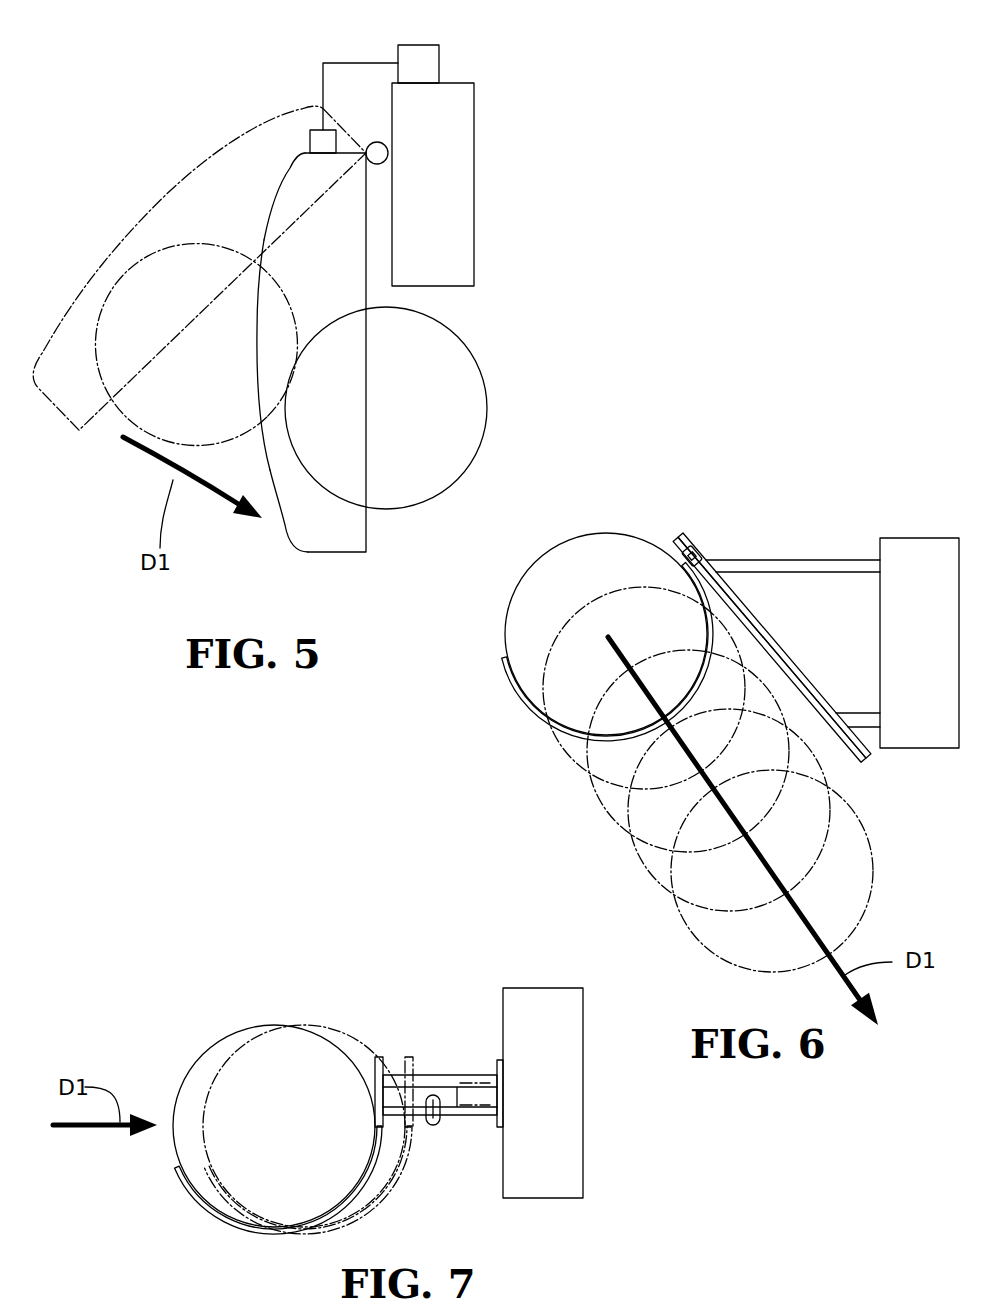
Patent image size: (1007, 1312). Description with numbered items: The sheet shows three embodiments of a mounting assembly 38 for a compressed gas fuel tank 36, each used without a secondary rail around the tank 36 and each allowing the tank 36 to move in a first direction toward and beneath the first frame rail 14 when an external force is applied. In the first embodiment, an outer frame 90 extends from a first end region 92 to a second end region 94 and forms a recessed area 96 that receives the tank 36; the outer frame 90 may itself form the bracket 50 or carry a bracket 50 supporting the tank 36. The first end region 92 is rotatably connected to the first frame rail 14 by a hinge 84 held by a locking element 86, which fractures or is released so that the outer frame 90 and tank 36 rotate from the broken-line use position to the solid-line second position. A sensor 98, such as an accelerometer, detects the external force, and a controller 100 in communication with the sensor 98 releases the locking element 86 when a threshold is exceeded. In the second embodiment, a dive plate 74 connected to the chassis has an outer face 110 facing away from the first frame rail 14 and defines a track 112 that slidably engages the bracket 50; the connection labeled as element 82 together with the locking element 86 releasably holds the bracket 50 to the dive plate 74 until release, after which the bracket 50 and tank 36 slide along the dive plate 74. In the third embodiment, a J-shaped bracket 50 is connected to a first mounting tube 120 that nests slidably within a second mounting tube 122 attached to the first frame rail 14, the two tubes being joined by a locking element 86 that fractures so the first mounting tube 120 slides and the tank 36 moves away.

In FIG. 5, the first frame rail 14 is at (474, 195).
In FIG. 6, the first frame rail 14 is at (930, 538).
In FIG. 7, the first frame rail 14 is at (540, 988).
In FIG. 5, the compressed gas fuel tank 36 is at (473, 352).
In FIG. 6, the compressed gas fuel tank 36 is at (615, 532).
In FIG. 7, the compressed gas fuel tank 36 is at (222, 1035).
In FIG. 5, the mounting assembly 38 is at (150, 178).
In FIG. 6, the mounting assembly 38 is at (862, 792).
In FIG. 7, the mounting assembly 38 is at (388, 952).
In FIG. 6, the bracket 50 is at (545, 705).
In FIG. 7, the bracket 50 is at (262, 1232).
In FIG. 6, the dive plate 74 is at (753, 620).
In FIG. 6, the fastener 82 is at (692, 555).
In FIG. 5, the hinge 84 is at (463, 132).
In FIG. 5, the locking element 86 is at (380, 155).
In FIG. 6, the locking element 86 is at (702, 553).
In FIG. 7, the locking element 86 is at (433, 1127).
In FIG. 5, the outer frame 90 is at (263, 463).
In FIG. 5, the first end region 92 is at (293, 165).
In FIG. 5, the second end region 94 is at (310, 558).
In FIG. 5, the recessed area 96 is at (380, 524).
In FIG. 5, the sensor 98 is at (310, 140).
In FIG. 5, the controller 100 is at (439, 63).
In FIG. 6, the outer face 110 is at (780, 660).
In FIG. 6, the track 112 is at (768, 526).
In FIG. 7, the first mounting tube 120 is at (402, 1075).
In FIG. 7, the second mounting tube 122 is at (482, 1072).